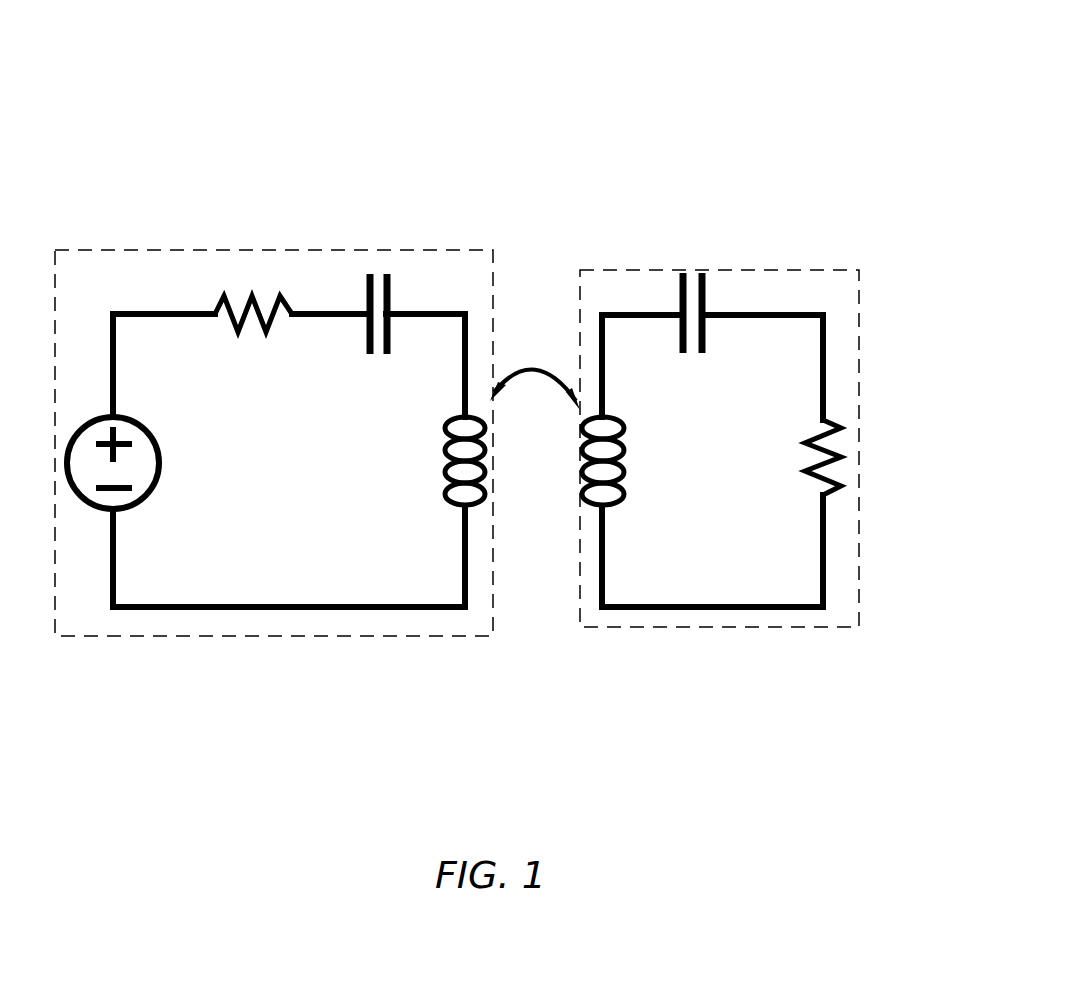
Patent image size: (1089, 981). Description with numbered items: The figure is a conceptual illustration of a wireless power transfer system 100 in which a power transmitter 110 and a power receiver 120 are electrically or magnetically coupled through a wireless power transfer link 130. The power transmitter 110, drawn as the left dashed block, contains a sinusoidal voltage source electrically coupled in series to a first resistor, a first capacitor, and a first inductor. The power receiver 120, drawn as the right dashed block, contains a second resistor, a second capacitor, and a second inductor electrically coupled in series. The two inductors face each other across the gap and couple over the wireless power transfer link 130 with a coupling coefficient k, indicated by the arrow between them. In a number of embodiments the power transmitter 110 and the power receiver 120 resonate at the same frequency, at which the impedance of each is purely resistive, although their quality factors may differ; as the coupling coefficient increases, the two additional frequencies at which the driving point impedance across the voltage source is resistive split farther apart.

The wireless power transfer system 100 is at (926, 130).
The power transmitter 110 is at (272, 250).
The power receiver 120 is at (742, 270).
The wireless power transfer link 130 is at (545, 338).